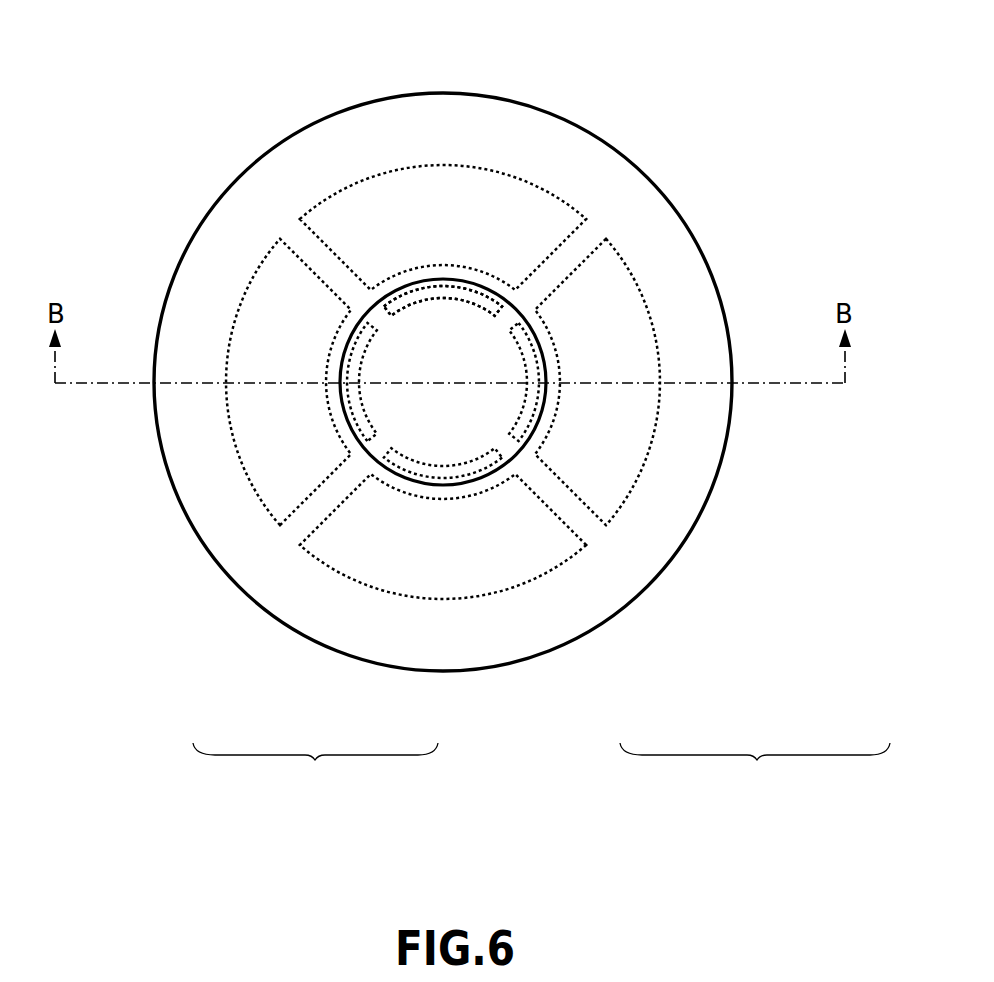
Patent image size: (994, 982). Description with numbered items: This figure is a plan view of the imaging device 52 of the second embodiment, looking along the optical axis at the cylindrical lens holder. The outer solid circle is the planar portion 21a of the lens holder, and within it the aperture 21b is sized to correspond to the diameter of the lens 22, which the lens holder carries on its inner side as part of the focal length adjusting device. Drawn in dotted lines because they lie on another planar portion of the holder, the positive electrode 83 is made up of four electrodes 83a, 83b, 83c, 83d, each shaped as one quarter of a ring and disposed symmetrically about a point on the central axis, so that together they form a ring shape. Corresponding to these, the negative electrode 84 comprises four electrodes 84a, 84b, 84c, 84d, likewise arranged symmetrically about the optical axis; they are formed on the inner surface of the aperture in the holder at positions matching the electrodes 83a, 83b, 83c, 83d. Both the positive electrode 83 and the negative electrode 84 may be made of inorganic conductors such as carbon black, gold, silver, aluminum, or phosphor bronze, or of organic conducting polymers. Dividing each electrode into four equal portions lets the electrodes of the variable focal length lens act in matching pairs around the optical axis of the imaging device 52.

The planar portion 21a is at (518, 125).
The aperture 21b is at (520, 320).
The lens 22 is at (436, 302).
The imaging device 52 is at (783, 84).
The positive electrode 83 is at (315, 775).
The electrode 83a is at (345, 268).
The electrode 83b is at (310, 497).
The electrode 83c is at (340, 580).
The electrode 83d is at (590, 510).
The negative electrode 84 is at (755, 775).
The electrode 84a is at (373, 413).
The electrode 84b is at (487, 477).
The electrode 84c is at (383, 282).
The electrode 84d is at (543, 393).